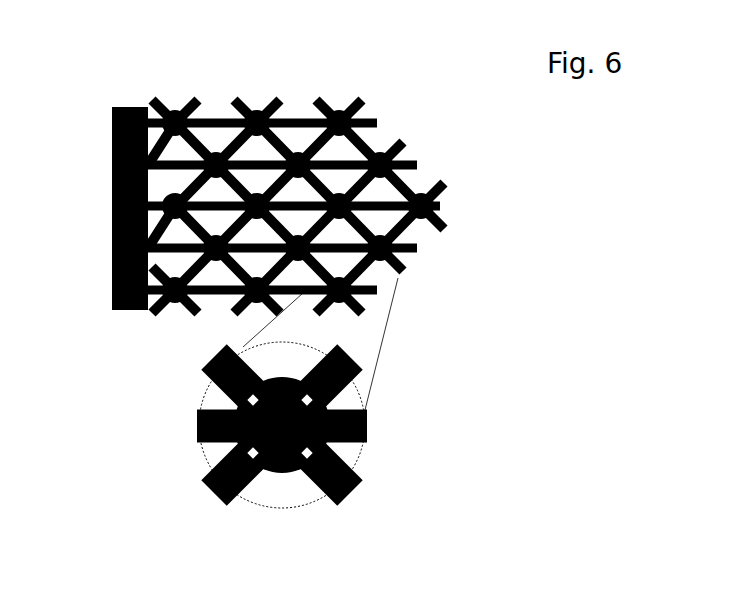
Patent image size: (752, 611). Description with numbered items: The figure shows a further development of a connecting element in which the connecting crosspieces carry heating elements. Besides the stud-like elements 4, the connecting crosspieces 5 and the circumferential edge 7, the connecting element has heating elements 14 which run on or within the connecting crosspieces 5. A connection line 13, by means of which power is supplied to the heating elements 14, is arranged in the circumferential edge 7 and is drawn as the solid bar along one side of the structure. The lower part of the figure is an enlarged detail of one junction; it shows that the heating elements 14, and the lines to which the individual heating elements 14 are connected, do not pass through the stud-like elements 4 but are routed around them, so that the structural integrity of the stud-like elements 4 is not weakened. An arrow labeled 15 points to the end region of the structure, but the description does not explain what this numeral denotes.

The circumferential edge 7 is at (110, 107).
The stud-like elements 4 is at (207, 108).
The connecting crosspieces 5 is at (298, 108).
The connection line 13 is at (112, 211).
The heating elements 14 is at (378, 134).
The end region 15 is at (436, 257).